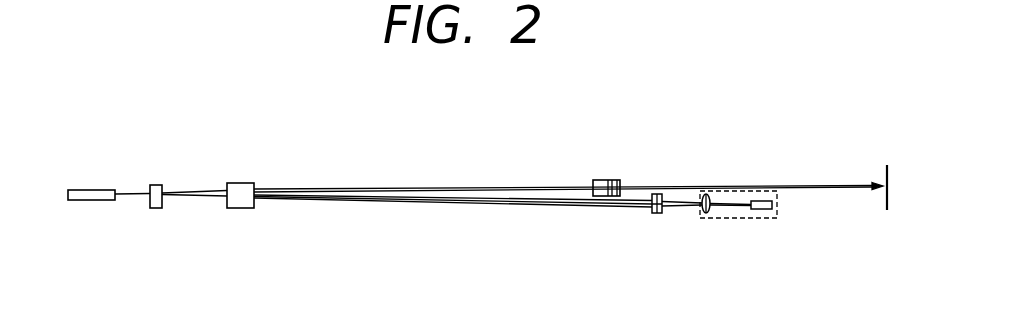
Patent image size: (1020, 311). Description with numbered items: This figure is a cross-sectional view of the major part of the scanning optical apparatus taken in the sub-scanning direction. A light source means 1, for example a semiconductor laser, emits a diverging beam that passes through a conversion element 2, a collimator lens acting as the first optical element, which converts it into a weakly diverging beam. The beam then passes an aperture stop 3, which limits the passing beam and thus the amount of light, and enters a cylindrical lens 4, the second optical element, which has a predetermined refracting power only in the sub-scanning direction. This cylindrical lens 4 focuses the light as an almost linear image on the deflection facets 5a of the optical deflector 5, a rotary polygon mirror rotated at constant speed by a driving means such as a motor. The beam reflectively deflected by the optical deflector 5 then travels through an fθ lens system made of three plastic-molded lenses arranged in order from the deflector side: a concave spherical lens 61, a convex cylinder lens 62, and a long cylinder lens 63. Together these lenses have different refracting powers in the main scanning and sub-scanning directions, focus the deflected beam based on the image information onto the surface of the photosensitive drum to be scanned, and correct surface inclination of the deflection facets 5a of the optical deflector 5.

The light source means 1 is at (762, 211).
The conversion element (collimator lens) 2 is at (712, 218).
The aperture stop 3 is at (665, 214).
The cylindrical lens 4 is at (652, 211).
The optical deflector 5 is at (100, 201).
The deflection facets 5a is at (118, 191).
The concave spherical lens 61 is at (156, 209).
The convex cylinder lens 62 is at (242, 209).
The long cylinder lens 63 is at (613, 179).